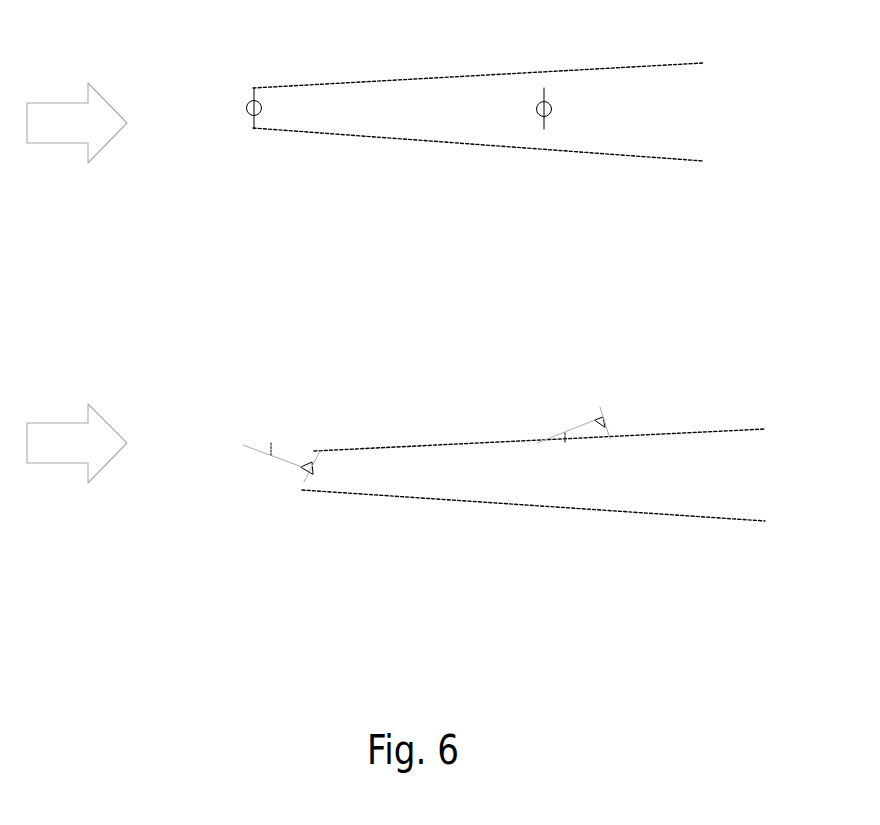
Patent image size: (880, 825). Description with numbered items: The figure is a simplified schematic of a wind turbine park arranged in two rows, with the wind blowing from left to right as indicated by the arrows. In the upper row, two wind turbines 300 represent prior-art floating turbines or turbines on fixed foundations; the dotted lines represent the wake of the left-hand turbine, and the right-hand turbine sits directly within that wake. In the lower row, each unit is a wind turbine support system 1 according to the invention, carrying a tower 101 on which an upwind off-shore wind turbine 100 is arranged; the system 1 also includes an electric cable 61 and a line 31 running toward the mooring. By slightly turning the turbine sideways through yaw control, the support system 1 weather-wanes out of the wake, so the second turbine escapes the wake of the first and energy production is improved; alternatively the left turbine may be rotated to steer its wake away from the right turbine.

The wind turbine 300 is at (248, 102).
The wind turbine support system 1 is at (354, 463).
The upwind off-shore wind turbine 100 is at (354, 463).
The tower 101 is at (298, 473).
The flow guiding element 31 is at (367, 457).
The electric cable 61 is at (259, 458).